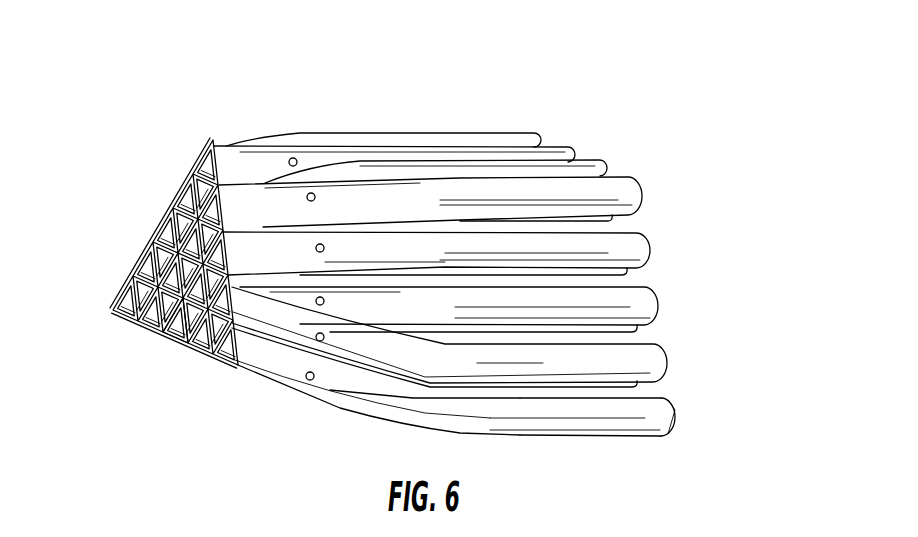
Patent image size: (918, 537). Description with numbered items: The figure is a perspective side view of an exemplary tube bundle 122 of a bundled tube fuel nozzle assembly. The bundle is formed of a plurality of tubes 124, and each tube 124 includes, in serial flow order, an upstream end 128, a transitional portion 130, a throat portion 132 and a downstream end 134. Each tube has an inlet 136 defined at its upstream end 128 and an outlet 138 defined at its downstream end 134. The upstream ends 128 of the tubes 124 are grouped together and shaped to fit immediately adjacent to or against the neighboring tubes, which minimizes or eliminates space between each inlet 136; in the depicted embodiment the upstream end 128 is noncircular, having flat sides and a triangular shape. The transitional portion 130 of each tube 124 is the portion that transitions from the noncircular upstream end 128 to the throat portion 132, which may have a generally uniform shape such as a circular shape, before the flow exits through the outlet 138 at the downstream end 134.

The tube bundle 122 is at (578, 86).
The tube 124 is at (425, 412).
The upstream end 128 is at (228, 368).
The transitional portion 130 is at (329, 390).
The throat portion 132 is at (531, 415).
The downstream end 134 is at (663, 413).
The inlet 136 is at (168, 342).
The outlet 138 is at (684, 410).